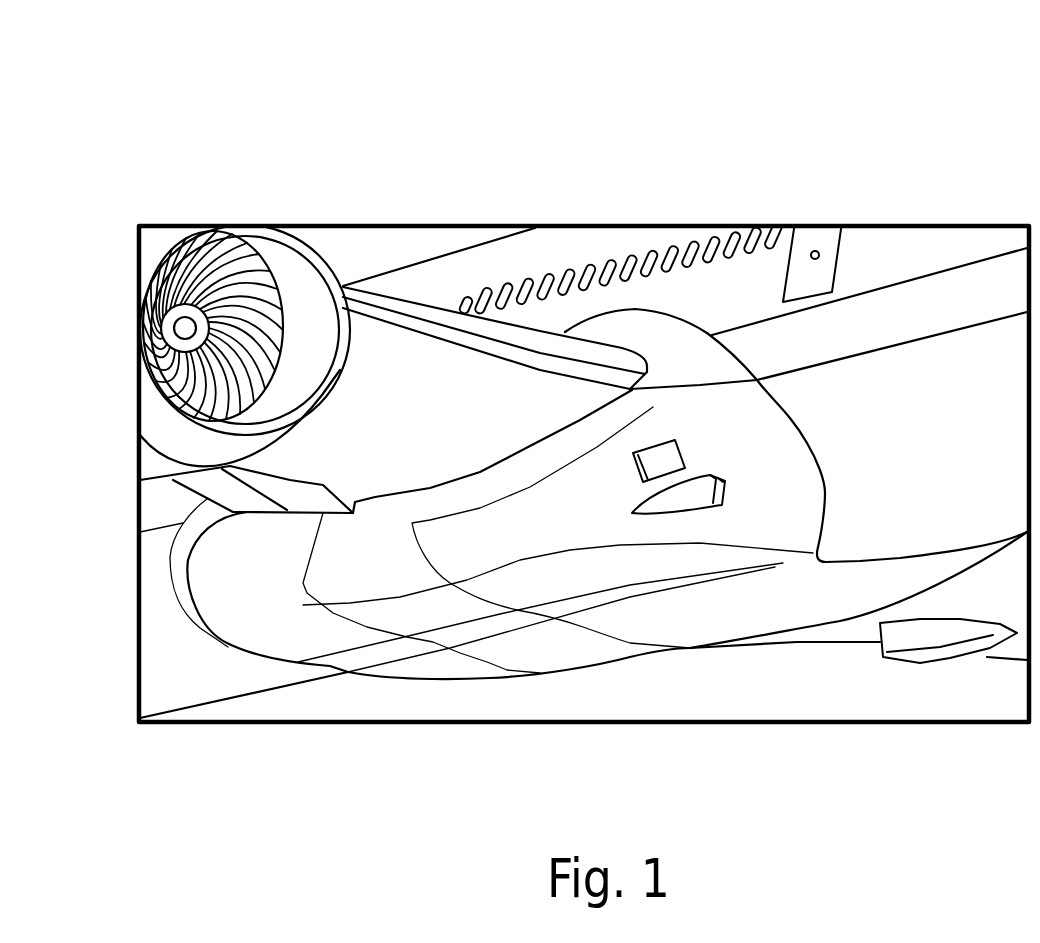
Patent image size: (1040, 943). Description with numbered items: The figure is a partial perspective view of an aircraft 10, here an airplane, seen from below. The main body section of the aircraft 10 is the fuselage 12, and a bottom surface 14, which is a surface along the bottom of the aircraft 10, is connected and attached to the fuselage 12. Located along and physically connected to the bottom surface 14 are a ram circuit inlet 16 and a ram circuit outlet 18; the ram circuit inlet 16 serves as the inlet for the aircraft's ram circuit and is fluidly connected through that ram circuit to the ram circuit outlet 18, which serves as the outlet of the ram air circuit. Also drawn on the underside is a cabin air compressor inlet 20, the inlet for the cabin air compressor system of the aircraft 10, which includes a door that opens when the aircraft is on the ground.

The aircraft 10 is at (327, 143).
The fuselage 12 is at (877, 420).
The bottom surface 14 is at (769, 487).
The ram circuit inlet 16 is at (643, 474).
The ram circuit outlet 18 is at (523, 598).
The cabin air compressor inlet 20 is at (695, 500).